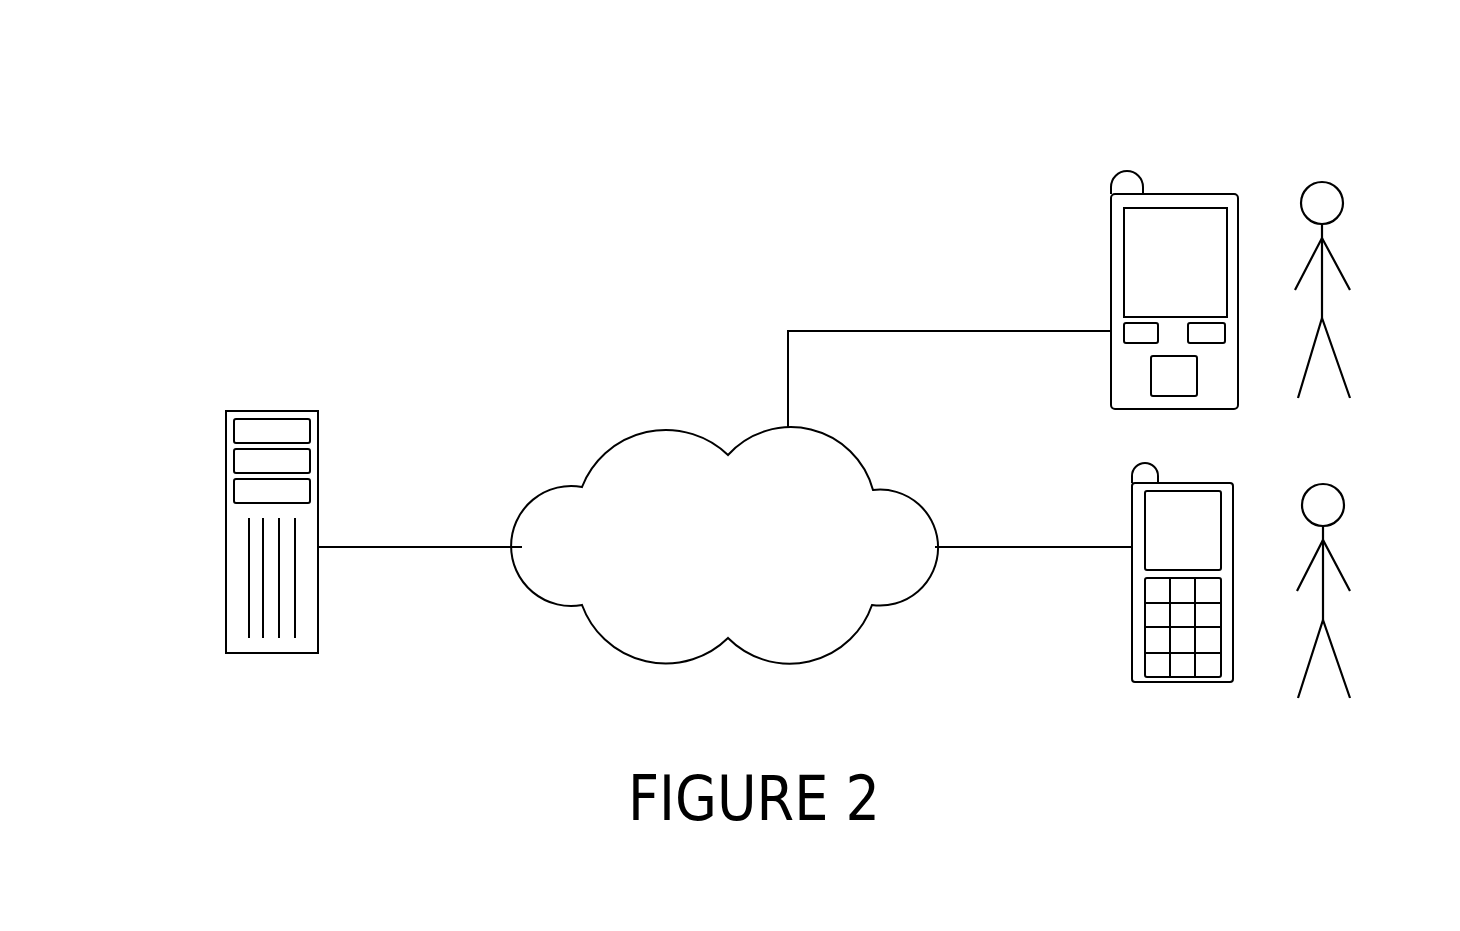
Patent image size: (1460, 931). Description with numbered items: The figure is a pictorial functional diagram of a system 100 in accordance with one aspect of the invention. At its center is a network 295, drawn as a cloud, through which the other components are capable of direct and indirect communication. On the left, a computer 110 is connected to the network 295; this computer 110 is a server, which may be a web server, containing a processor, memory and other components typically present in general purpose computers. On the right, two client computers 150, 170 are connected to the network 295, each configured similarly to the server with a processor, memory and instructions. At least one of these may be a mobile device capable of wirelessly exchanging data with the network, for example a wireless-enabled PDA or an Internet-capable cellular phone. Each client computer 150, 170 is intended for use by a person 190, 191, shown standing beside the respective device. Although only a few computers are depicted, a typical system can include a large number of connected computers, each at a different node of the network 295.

The system 100 is at (744, 97).
The computer 110 is at (226, 518).
The network 295 is at (665, 427).
The client computer 150 is at (1111, 275).
The client computer 170 is at (1132, 528).
The person 190 is at (1323, 290).
The person 191 is at (1323, 592).